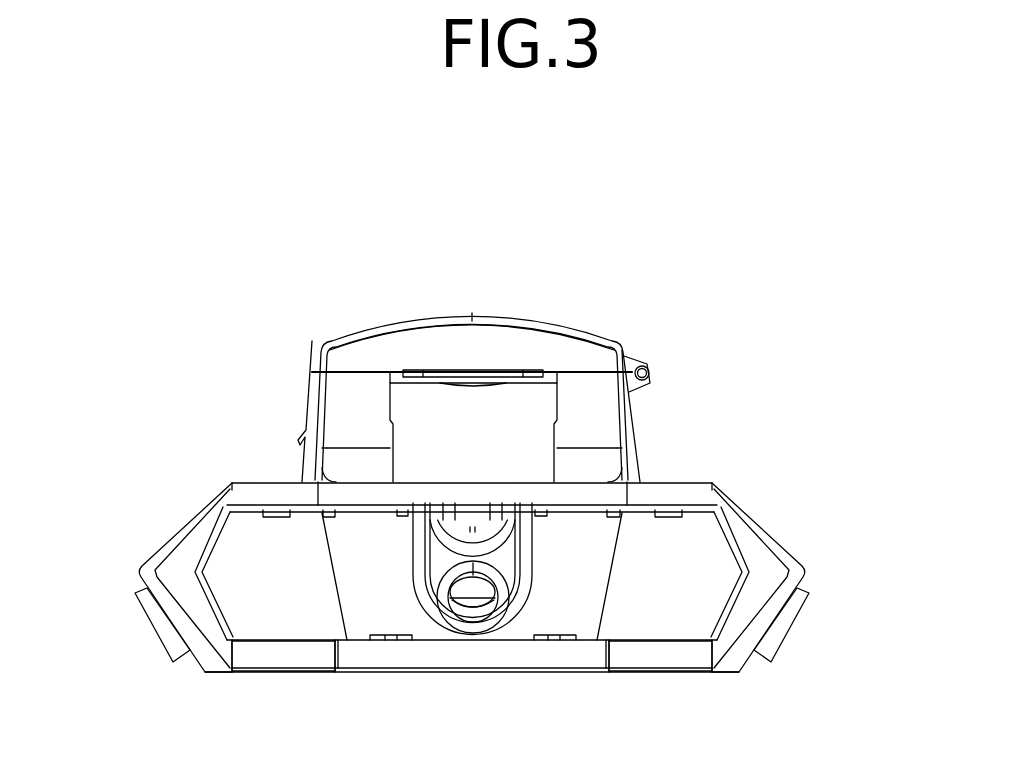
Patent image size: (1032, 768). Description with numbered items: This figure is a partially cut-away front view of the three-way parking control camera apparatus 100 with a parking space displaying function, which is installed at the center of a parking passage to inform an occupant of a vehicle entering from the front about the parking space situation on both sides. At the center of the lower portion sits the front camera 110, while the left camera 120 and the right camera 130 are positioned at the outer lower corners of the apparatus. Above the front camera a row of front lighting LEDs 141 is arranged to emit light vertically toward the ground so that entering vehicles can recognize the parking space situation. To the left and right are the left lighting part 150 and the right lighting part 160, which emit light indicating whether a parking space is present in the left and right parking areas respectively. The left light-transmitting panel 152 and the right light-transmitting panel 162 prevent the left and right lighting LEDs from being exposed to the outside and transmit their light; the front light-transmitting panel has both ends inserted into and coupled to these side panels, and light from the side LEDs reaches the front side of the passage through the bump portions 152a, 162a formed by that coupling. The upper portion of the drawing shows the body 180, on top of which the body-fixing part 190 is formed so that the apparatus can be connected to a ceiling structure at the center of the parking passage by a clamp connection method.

The three-way parking control camera apparatus 100 is at (672, 247).
The front camera 110 is at (473, 617).
The left camera 120 is at (173, 638).
The right camera 130 is at (771, 638).
The front lighting LEDs 141 is at (328, 518).
The left lighting part 150 is at (128, 536).
The left light-transmitting panel 152 is at (188, 513).
The bump portion of the left light-transmitting panel 152a is at (283, 657).
The right lighting part 160 is at (816, 536).
The right light-transmitting panel 162 is at (756, 513).
The bump portion of the right light-transmitting panel 162a is at (661, 657).
The body 180 is at (468, 497).
The body-fixing part 190 is at (497, 316).